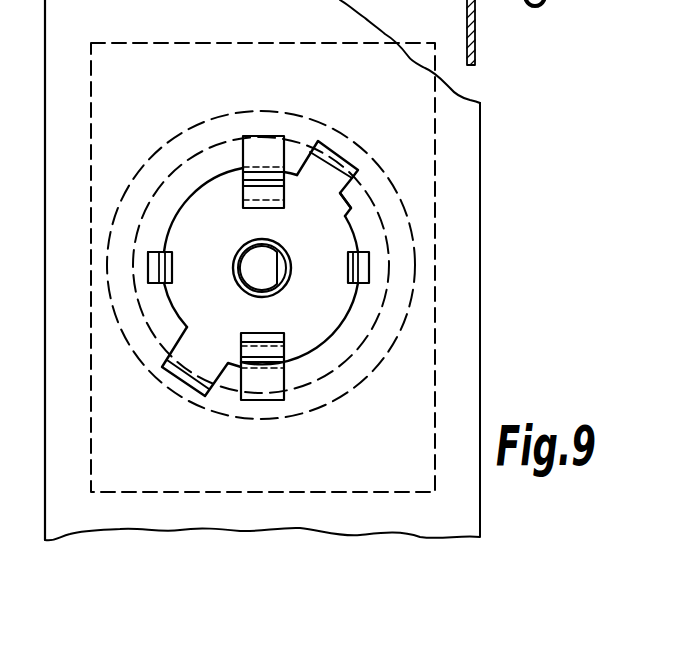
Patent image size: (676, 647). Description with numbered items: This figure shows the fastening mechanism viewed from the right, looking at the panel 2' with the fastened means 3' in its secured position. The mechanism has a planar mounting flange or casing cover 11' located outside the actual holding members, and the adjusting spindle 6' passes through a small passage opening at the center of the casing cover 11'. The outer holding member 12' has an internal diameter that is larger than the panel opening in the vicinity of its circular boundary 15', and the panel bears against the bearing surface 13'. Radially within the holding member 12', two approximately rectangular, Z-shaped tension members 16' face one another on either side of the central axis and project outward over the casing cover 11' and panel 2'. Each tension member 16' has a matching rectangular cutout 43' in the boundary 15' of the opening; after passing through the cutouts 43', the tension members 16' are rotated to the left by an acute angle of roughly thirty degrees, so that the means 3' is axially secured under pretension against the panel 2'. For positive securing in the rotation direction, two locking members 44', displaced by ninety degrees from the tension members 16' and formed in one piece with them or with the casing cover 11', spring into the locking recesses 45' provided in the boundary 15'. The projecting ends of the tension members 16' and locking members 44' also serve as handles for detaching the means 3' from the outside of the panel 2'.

The panel 2' is at (281, 270).
The means 3' is at (263, 246).
The holding member 12' is at (261, 250).
The circular boundary 15' is at (261, 265).
The casing cover 11' is at (270, 266).
The bearing surface 13' is at (344, 162).
The rectangular cutout 43' is at (321, 196).
The tension member 16' is at (244, 268).
The locking member 44' is at (258, 280).
The locking recess 45' is at (157, 230).
The adjusting spindle 6' is at (248, 267).